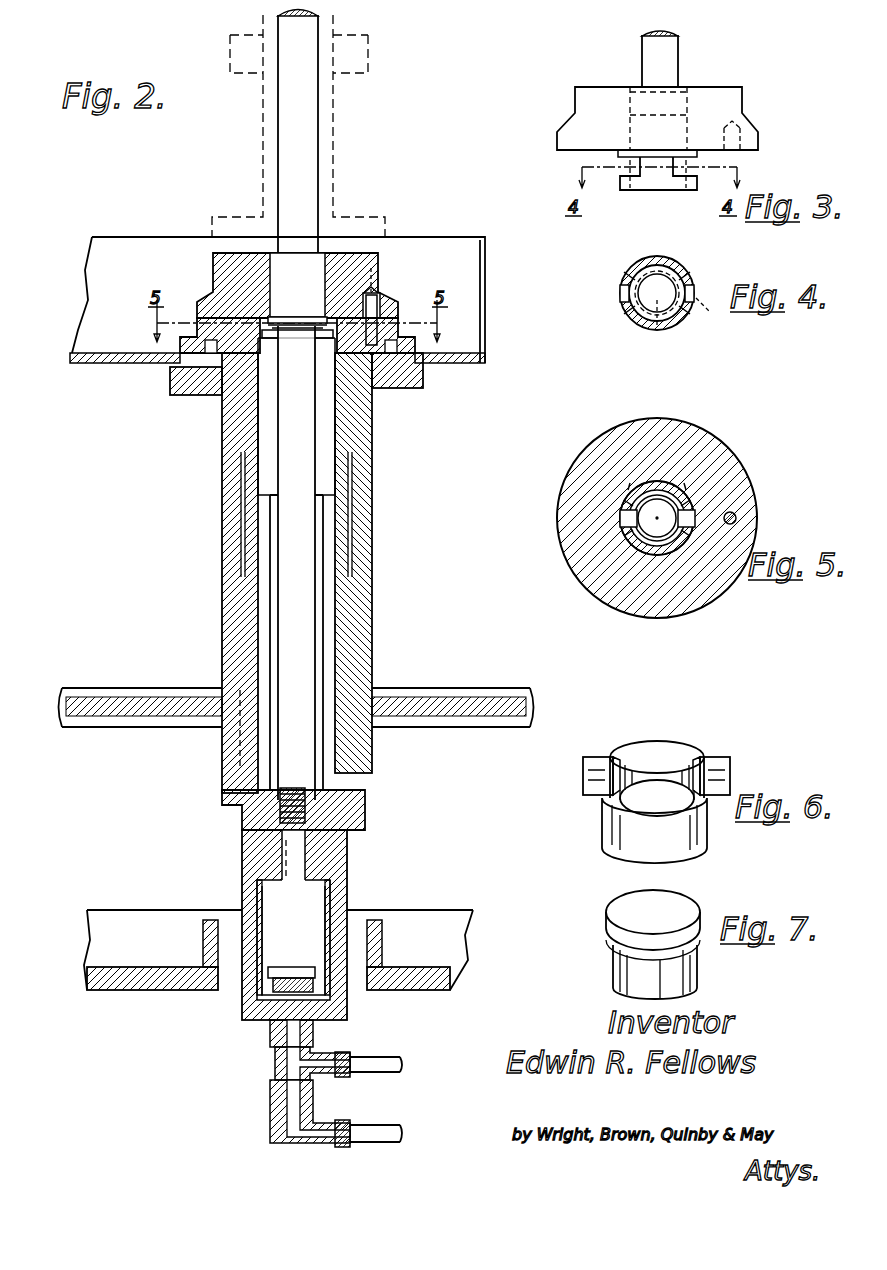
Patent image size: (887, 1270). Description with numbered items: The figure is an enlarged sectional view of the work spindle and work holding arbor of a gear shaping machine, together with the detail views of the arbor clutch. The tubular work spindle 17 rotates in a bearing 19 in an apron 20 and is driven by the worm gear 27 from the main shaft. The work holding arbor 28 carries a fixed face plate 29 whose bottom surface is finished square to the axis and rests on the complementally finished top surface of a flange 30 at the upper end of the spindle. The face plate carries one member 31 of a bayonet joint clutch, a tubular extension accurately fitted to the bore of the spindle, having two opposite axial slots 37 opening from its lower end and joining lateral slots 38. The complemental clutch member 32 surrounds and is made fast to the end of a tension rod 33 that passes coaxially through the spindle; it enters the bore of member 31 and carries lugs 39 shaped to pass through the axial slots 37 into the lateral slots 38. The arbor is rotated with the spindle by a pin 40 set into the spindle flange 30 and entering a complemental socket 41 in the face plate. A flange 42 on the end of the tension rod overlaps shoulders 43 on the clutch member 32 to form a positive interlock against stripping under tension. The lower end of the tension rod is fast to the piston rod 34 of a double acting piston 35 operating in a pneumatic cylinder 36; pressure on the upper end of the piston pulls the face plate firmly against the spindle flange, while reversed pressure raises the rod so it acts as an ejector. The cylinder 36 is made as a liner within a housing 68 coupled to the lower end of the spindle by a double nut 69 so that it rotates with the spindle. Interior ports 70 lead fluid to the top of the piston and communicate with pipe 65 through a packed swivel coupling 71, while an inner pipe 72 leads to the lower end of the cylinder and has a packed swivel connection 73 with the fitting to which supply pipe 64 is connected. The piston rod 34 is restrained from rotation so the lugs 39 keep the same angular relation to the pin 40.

In FIG. 2, the tubular work spindle 17 is at (248, 430).
In FIG. 2, the bearing 19 is at (232, 542).
In FIG. 2, the apron 20 is at (178, 378).
In FIG. 2, the worm gear 27 is at (92, 700).
In FIG. 2, the work holding arbor 28 is at (290, 147).
In FIG. 3, the work holding arbor 28 is at (652, 60).
In FIG. 2, the face plate 29 is at (235, 275).
In FIG. 3, the face plate 29 is at (590, 100).
In FIG. 2, the flange 30 is at (222, 336).
In FIG. 5, the flange 30 is at (598, 462).
In FIG. 2, the clutch member 31 is at (270, 365).
In FIG. 3, the clutch member 31 is at (652, 185).
In FIG. 4, the clutch member 31 is at (640, 262).
In FIG. 5, the clutch member 31 is at (667, 486).
In FIG. 5, the complemental clutch member 32 is at (680, 505).
In FIG. 6, the complemental clutch member 32 is at (665, 745).
In FIG. 2, the tension rod 33 is at (296, 574).
In FIG. 4, the tension rod 33 is at (657, 321).
In FIG. 5, the tension rod 33 is at (657, 518).
In FIG. 7, the tension rod 33 is at (615, 968).
In FIG. 2, the piston rod 34 is at (298, 870).
In FIG. 2, the double acting piston 35 is at (305, 972).
In FIG. 2, the pneumatic cylinder 36 is at (330, 912).
In FIG. 4, the axial slots 37 is at (695, 290).
In FIG. 5, the axial slots 37 is at (630, 483).
In FIG. 3, the lateral slots 38 is at (632, 176).
In FIG. 4, the lateral slots 38 is at (685, 272).
In FIG. 5, the lateral slots 38 is at (622, 505).
In FIG. 2, the lugs 39 is at (270, 322).
In FIG. 4, the lugs 39 is at (692, 317).
In FIG. 5, the lugs 39 is at (625, 522).
In FIG. 6, the lugs 39 is at (583, 767).
In FIG. 2, the pin 40 is at (372, 312).
In FIG. 3, the pin 40 is at (732, 135).
In FIG. 5, the pin 40 is at (737, 515).
In FIG. 2, the socket 41 is at (372, 290).
In FIG. 2, the flange 42 is at (292, 322).
In FIG. 5, the flange 42 is at (657, 532).
In FIG. 7, the flange 42 is at (608, 915).
In FIG. 6, the shoulders 43 is at (618, 758).
In FIG. 2, the pipe 64 is at (372, 1133).
In FIG. 2, the pipe 65 is at (378, 1063).
In FIG. 2, the housing 68 is at (340, 935).
In FIG. 2, the double nut 69 is at (365, 812).
In FIG. 2, the interior ports 70 is at (253, 958).
In FIG. 2, the packed swivel coupling 71 is at (275, 1035).
In FIG. 2, the inner pipe 72 is at (287, 1065).
In FIG. 2, the packed swivel connection 73 is at (278, 1110).